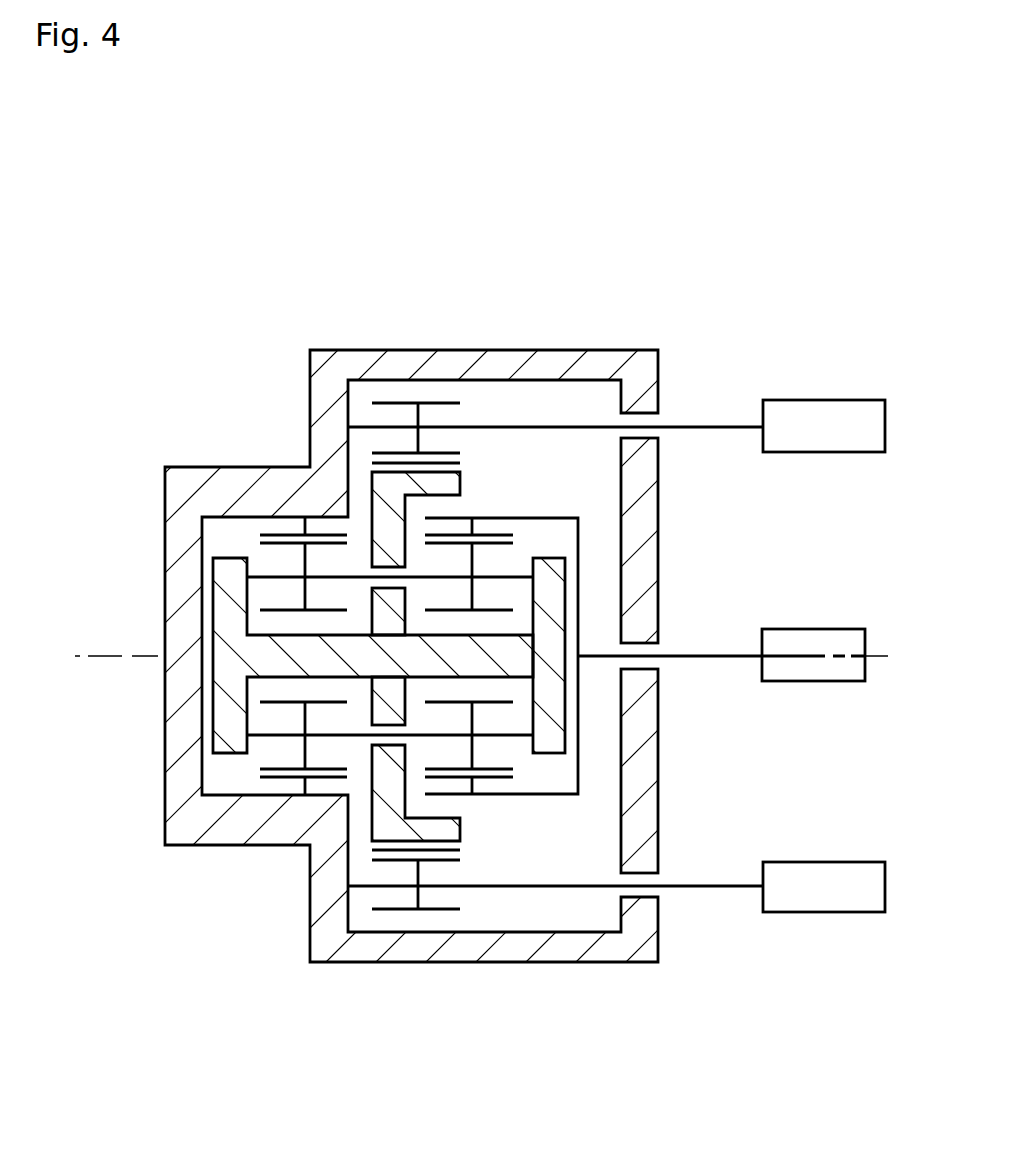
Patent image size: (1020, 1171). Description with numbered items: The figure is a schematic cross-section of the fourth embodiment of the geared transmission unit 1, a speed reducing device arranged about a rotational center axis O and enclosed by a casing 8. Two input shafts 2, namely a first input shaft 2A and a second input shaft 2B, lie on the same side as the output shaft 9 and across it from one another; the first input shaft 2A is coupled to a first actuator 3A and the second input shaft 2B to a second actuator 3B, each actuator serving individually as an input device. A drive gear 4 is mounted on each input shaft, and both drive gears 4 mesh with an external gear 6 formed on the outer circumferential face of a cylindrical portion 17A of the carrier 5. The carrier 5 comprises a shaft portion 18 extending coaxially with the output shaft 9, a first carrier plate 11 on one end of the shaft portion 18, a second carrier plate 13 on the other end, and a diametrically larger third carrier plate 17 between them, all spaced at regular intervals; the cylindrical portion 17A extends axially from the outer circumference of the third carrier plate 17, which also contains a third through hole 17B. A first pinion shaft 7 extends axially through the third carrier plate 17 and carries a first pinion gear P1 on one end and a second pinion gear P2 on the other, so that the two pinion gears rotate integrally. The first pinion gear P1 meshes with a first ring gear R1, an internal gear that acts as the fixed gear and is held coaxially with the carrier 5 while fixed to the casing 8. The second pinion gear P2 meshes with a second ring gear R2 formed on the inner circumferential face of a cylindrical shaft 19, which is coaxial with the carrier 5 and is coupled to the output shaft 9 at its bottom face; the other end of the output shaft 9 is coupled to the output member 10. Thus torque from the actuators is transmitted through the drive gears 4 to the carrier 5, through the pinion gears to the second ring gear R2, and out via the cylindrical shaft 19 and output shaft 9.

The geared transmission unit 1 is at (483, 227).
The input shafts 2 is at (555, 628).
The first input shaft 2A is at (695, 426).
The second input shaft 2B is at (695, 886).
The first actuator 3A is at (833, 400).
The second actuator 3B is at (817, 862).
The drive gear 4 is at (424, 403).
The carrier 5 is at (220, 548).
The external gear 6 is at (380, 464).
The first pinion shaft 7 is at (520, 738).
The casing 8 is at (172, 528).
The output shaft 9 is at (718, 656).
The output member 10 is at (813, 629).
The first carrier plate 11 is at (237, 745).
The second carrier plate 13 is at (550, 742).
The third carrier plate 17 is at (383, 713).
The cylindrical portion 17A is at (448, 483).
The third through hole 17B is at (387, 742).
The shaft portion 18 is at (297, 653).
The cylindrical shaft 19 is at (580, 722).
The first ring gear R1 is at (260, 535).
The second ring gear R2 is at (513, 535).
The first pinion gear P1 is at (283, 608).
The second pinion gear P2 is at (493, 610).
The rotational center axis O is at (494, 656).